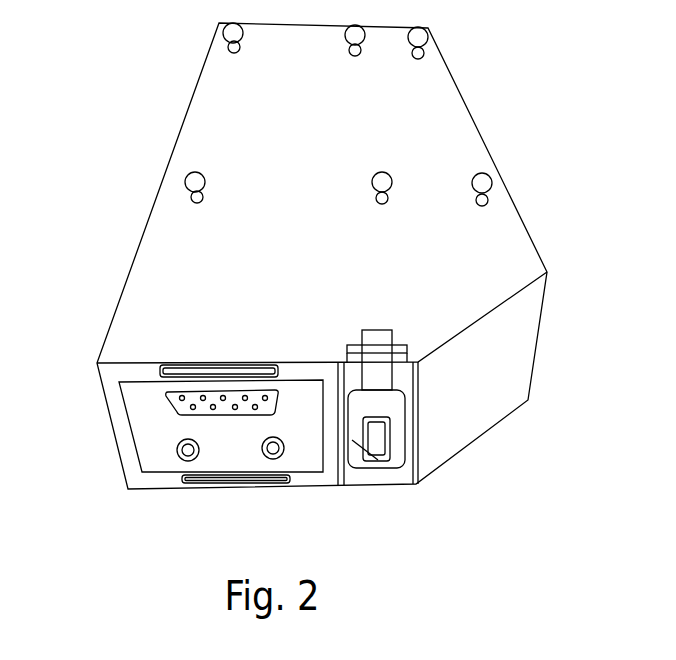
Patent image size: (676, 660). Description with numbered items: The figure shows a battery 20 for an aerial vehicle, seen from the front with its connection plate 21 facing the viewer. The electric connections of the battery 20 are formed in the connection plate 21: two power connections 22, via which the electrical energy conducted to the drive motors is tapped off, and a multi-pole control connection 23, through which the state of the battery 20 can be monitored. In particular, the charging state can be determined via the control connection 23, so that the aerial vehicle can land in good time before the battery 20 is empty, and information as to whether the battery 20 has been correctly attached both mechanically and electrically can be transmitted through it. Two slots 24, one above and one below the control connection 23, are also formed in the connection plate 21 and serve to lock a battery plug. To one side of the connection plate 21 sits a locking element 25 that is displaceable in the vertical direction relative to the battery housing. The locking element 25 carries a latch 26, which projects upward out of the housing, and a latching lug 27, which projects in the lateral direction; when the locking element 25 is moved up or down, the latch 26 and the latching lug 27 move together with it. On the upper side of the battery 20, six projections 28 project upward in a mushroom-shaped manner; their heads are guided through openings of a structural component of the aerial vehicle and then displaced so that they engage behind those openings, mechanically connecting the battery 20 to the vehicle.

The battery 20 is at (468, 110).
The connection plate 21 is at (122, 427).
The power connections 22 is at (188, 461).
The control connection 23 is at (294, 380).
The slots 24 is at (211, 365).
The locking element 25 is at (407, 428).
The latch 26 is at (378, 345).
The latching lug 27 is at (370, 467).
The projections 28 is at (200, 173).